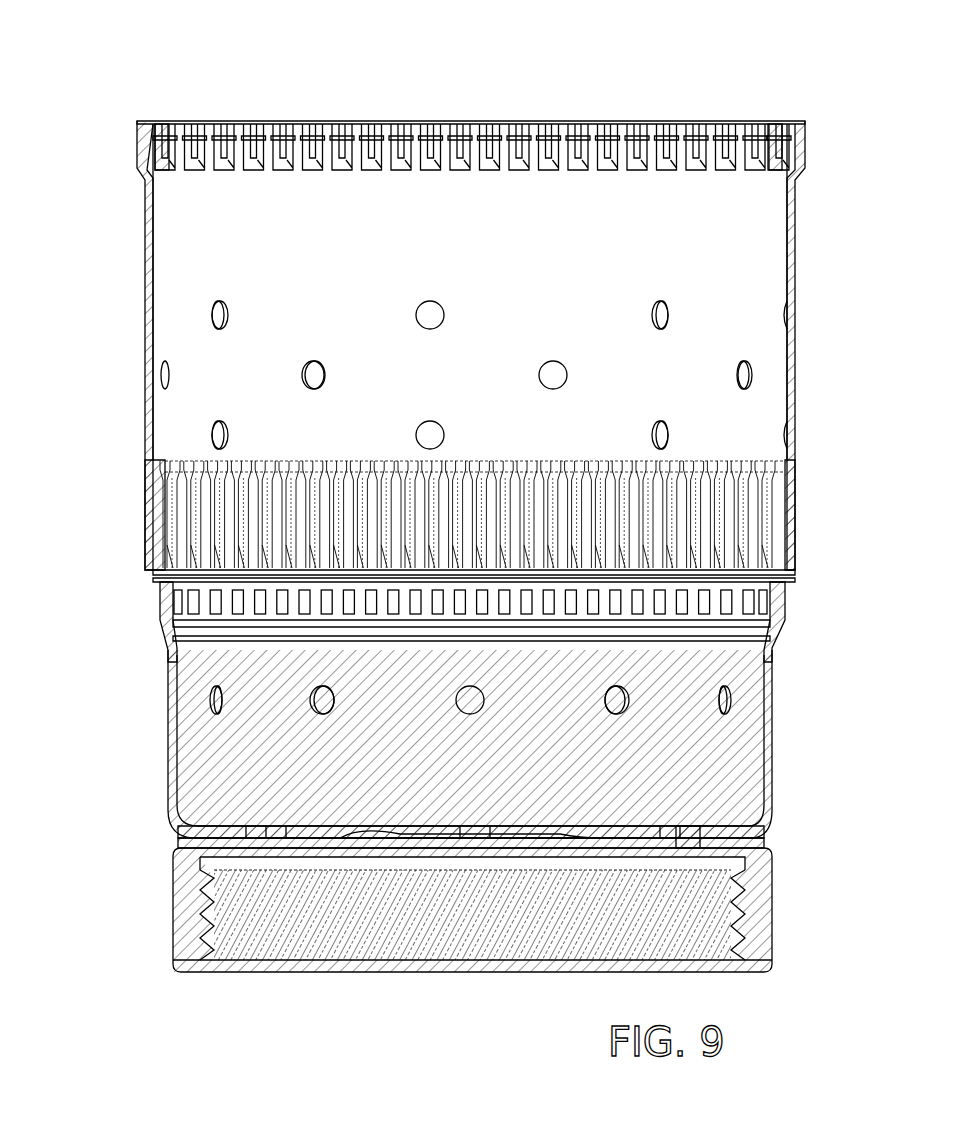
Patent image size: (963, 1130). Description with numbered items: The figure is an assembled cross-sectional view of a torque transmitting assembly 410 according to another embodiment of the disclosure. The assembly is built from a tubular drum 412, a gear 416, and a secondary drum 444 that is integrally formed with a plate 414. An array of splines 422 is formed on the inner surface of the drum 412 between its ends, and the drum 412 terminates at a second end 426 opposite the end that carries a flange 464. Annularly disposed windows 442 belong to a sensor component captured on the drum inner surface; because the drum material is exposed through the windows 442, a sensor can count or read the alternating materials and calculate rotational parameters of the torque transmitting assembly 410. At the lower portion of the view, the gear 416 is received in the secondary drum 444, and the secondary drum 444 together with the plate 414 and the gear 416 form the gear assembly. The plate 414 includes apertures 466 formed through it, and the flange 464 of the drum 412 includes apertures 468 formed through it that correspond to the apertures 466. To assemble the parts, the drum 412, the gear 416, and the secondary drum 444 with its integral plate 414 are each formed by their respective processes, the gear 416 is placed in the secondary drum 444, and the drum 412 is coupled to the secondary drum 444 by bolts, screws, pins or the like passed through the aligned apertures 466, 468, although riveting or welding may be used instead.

The torque transmitting assembly 410 is at (120, 55).
The drum 412 is at (797, 232).
The plate 414 is at (710, 848).
The gear 416 is at (712, 948).
The splines 422 is at (752, 520).
The second end 426 is at (792, 121).
The windows 442 is at (245, 600).
The secondary drum 444 is at (770, 907).
The flange 464 is at (750, 855).
The apertures 466 is at (720, 838).
The apertures 468 is at (684, 840).